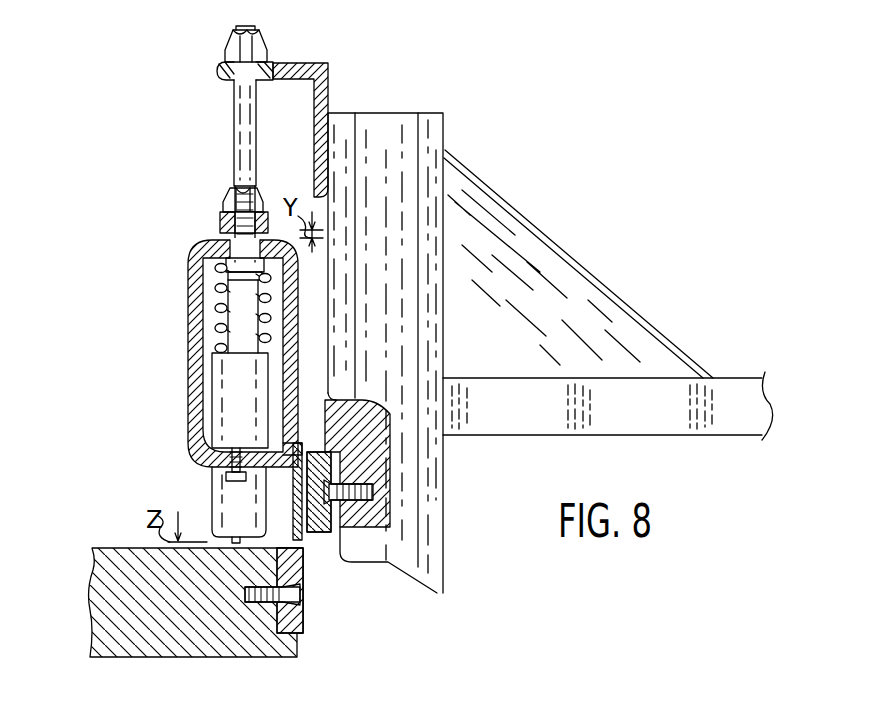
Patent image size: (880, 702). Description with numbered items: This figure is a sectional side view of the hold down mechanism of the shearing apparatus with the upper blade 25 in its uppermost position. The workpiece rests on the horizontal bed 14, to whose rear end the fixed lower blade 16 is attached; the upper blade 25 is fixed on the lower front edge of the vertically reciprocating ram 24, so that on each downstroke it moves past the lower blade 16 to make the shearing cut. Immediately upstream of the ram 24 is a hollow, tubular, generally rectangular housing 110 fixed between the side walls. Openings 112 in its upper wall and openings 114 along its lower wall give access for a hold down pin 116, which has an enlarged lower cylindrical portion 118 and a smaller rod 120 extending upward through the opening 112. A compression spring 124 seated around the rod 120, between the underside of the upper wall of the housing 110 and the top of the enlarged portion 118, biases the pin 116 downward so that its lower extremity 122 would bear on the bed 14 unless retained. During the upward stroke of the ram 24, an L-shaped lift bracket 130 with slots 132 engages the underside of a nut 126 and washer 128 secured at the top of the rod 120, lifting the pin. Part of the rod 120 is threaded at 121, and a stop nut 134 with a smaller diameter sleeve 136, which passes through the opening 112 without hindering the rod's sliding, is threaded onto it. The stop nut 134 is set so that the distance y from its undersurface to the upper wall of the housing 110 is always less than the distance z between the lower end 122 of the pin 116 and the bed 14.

The bed 14 is at (131, 556).
The fixed lower blade 16 is at (299, 625).
The ram 24 is at (387, 455).
The upper blade 25 is at (327, 533).
The housing 110 is at (190, 336).
The openings in upper wall 112 is at (222, 222).
The openings in lower wall 114 is at (212, 466).
The hold down pin 116 is at (214, 372).
The enlarged lower cylindrical portion 118 is at (225, 414).
The rod 120 is at (247, 137).
The threaded portion 121 is at (245, 268).
The lower extremity 122 is at (233, 535).
The compression spring 124 is at (221, 308).
The nut 126 is at (259, 40).
The washer 128 is at (262, 70).
The L-shaped lift bracket 130 is at (327, 70).
The slots 132 is at (218, 72).
The stop nut 134 is at (220, 200).
The sleeve 136 is at (233, 248).